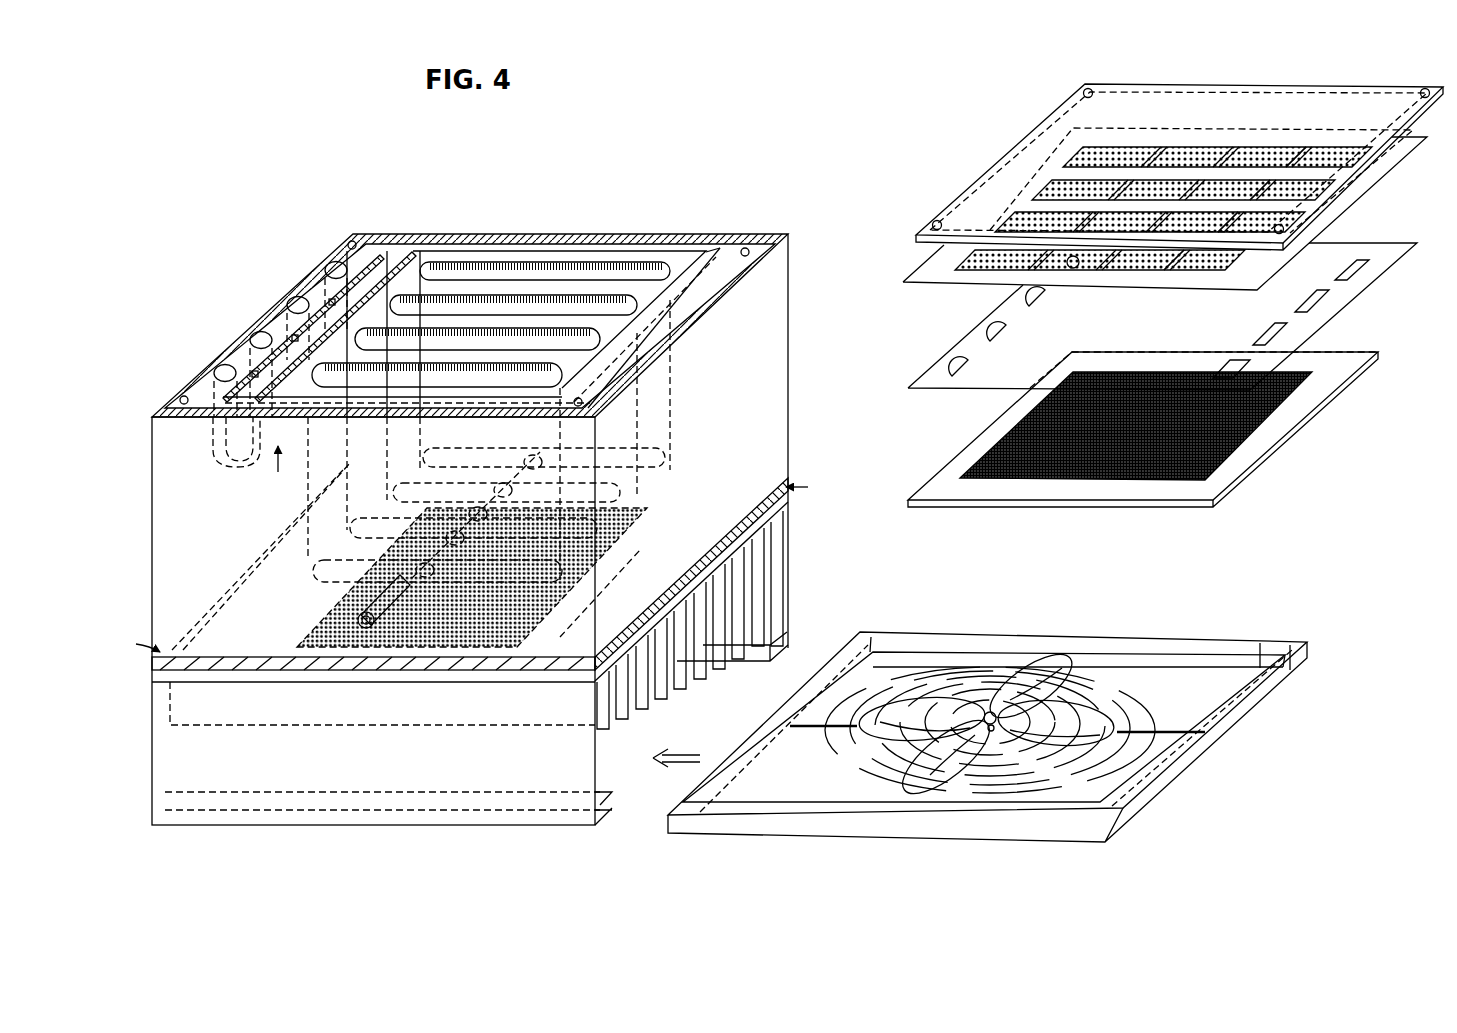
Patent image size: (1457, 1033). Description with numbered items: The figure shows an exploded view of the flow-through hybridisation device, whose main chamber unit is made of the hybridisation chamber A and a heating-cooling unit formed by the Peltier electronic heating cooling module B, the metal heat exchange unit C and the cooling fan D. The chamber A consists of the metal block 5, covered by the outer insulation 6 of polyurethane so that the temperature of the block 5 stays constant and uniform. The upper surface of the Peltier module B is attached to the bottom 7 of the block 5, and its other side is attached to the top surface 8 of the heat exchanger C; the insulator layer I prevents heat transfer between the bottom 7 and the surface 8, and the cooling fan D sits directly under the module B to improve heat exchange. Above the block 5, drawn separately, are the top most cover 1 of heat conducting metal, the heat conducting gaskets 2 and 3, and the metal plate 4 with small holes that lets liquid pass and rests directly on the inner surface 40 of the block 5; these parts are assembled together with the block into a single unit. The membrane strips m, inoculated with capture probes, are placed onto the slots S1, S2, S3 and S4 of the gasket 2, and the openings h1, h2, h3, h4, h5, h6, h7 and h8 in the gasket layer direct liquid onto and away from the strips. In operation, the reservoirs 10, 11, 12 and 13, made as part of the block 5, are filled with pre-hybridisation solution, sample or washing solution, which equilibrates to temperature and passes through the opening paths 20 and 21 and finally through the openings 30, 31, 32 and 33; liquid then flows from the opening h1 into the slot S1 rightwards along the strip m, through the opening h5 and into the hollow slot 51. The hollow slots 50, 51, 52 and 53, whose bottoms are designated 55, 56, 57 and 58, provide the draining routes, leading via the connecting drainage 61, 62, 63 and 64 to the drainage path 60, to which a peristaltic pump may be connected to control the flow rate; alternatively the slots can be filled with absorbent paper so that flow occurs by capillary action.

The top cover 1 is at (990, 162).
The gasket 2 is at (918, 264).
The gasket 3 is at (932, 356).
The metal plate 4 is at (942, 460).
The metal block 5 is at (468, 243).
The outer insulation 6 is at (745, 232).
The bottom of block 7 is at (782, 482).
The top surface of heat exchanger 8 is at (790, 501).
The reservoir 10 is at (222, 367).
The reservoir 11 is at (258, 334).
The reservoir 12 is at (294, 300).
The reservoir 13 is at (332, 266).
The opening path 20 is at (245, 470).
The opening path 21 is at (239, 439).
The opening 30 is at (251, 371).
The opening 31 is at (290, 336).
The opening 32 is at (328, 301).
The opening 33 is at (383, 250).
The inner surface of main block 40 is at (682, 258).
The hollow slot 50 is at (437, 377).
The hollow slot 51 is at (477, 341).
The hollow slot 52 is at (513, 306).
The hollow slot 53 is at (545, 272).
The slot bottom 55 is at (437, 570).
The slot bottom 56 is at (473, 529).
The slot bottom 57 is at (506, 492).
The slot bottom 58 is at (544, 457).
The drainage path 60 is at (356, 617).
The connecting drainage 61 is at (427, 574).
The connecting drainage 62 is at (466, 535).
The connecting drainage 63 is at (510, 494).
The connecting drainage 64 is at (533, 456).
The hybridisation chamber A is at (553, 233).
The Peltier electronic heating cooling module B is at (646, 514).
The metal heat exchange unit C is at (790, 557).
The cooling fan D is at (790, 713).
The insulator layer I is at (473, 571).
The gasket slot S1 is at (965, 250).
The gasket slot S2 is at (998, 228).
The gasket slot S3 is at (1034, 194).
The gasket slot S4 is at (1066, 160).
The membrane strip m is at (1237, 211).
The opening in gasket h1 is at (971, 372).
The opening in gasket h2 is at (1009, 338).
The opening in gasket h3 is at (1046, 304).
The opening in gasket h4 is at (1075, 270).
The opening in gasket h5 is at (1222, 365).
The opening in gasket h6 is at (1263, 331).
The opening in gasket h7 is at (1305, 299).
The opening in gasket h8 is at (1343, 266).